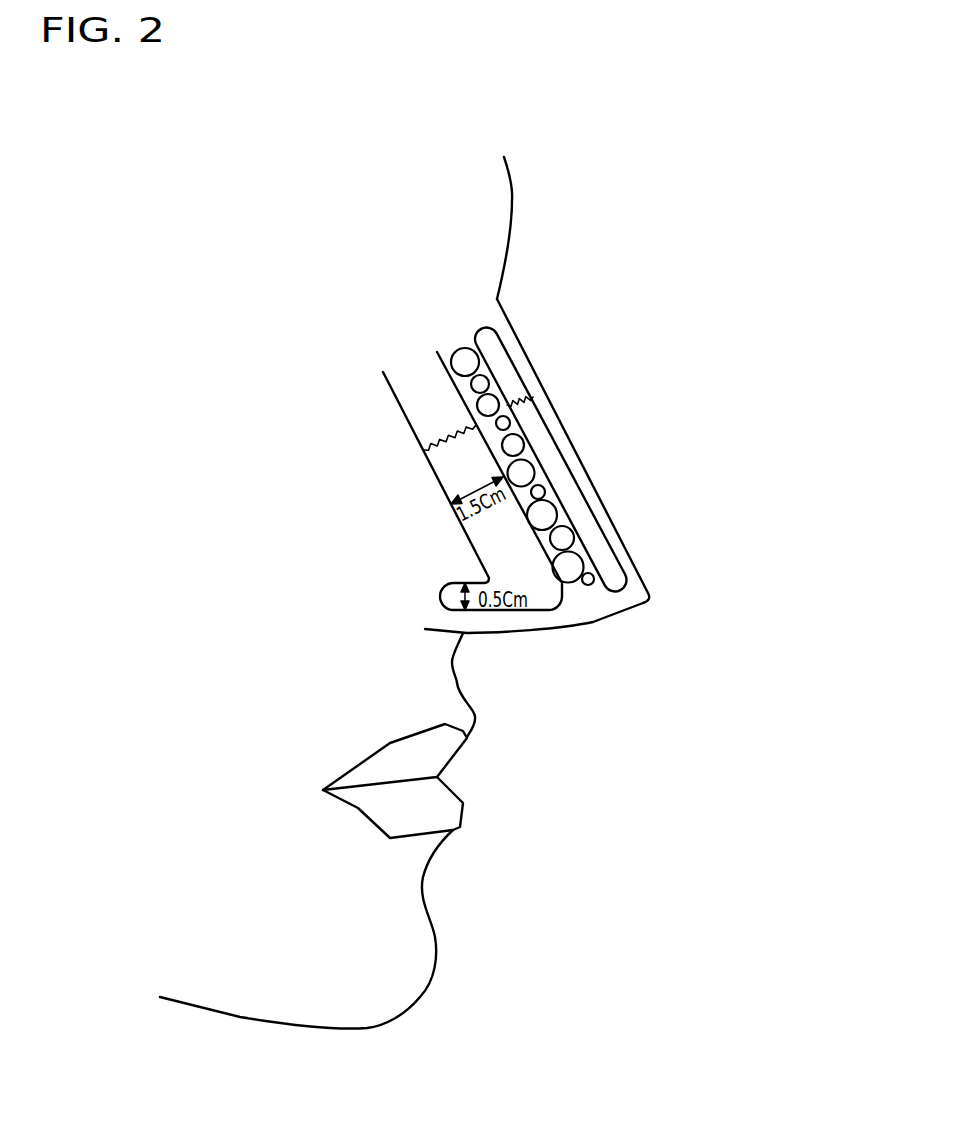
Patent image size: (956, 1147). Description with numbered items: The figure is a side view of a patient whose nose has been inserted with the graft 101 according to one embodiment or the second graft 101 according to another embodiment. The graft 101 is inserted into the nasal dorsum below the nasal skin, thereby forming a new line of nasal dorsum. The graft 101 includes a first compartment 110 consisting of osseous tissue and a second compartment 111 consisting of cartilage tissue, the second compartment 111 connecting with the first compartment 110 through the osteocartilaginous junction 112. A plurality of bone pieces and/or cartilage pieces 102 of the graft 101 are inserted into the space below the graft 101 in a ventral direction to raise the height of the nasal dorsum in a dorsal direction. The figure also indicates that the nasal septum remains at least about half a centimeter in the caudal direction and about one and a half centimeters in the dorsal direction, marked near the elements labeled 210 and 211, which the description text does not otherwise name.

The graft 101 is at (612, 305).
The bone pieces and/or cartilage pieces 102 is at (458, 360).
The first compartment 110 is at (510, 372).
The second compartment 111 is at (562, 472).
The osteocartilaginous junction 112 is at (533, 397).
The support frame 210 is at (408, 393).
The support strap 211 is at (457, 470).